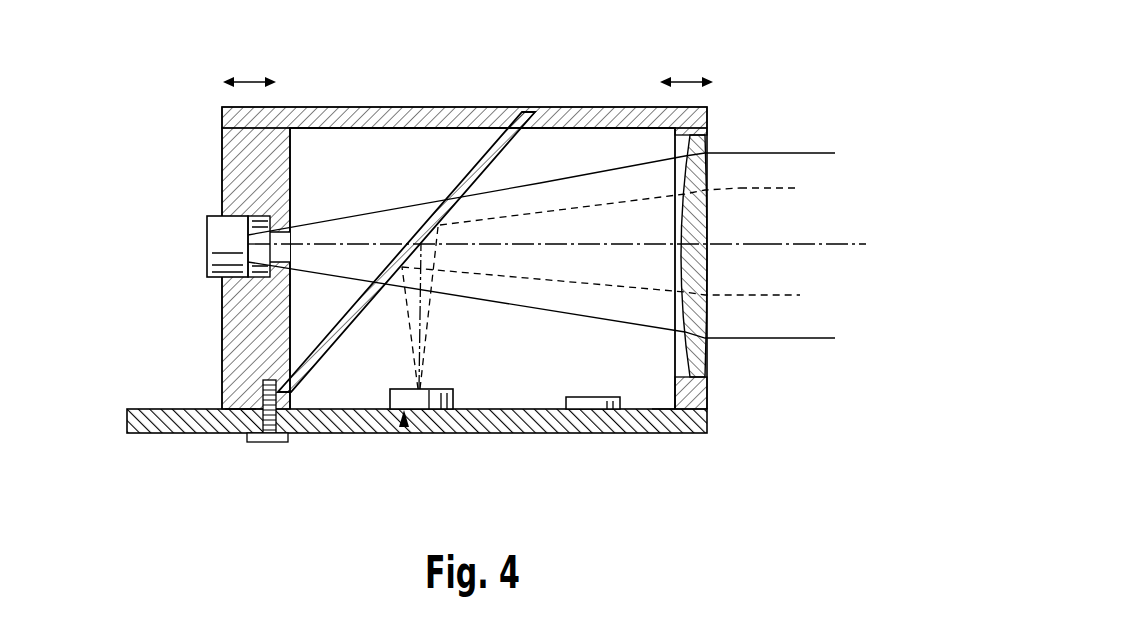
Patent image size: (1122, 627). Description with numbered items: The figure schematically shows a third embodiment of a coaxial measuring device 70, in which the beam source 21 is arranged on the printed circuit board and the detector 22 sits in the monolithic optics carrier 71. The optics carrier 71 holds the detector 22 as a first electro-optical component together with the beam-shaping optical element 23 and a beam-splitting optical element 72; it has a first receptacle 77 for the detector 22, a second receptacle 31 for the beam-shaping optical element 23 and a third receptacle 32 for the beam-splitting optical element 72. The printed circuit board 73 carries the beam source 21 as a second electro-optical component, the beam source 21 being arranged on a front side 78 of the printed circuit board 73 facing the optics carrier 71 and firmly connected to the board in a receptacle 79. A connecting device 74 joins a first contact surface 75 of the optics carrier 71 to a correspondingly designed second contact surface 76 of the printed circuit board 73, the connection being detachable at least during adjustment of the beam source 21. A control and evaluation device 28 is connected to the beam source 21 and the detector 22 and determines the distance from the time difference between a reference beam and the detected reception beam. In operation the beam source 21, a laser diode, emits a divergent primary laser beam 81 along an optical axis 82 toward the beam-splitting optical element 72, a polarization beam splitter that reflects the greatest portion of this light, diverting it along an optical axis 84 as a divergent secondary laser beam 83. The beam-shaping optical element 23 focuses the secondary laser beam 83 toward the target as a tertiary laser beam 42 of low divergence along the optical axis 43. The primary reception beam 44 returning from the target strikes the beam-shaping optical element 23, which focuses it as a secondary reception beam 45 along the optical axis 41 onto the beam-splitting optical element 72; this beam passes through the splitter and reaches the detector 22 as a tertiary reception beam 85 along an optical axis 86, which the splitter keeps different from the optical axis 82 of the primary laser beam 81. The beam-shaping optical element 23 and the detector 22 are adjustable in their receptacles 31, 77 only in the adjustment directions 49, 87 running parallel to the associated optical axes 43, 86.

The coaxial measuring device 70 is at (150, 158).
The monolithic optics carrier 71 is at (380, 113).
The beam-splitting optical element 72 is at (472, 172).
The printed circuit board 73 is at (170, 431).
The connecting device 74 is at (268, 442).
The first contact surface 75 is at (232, 412).
The second contact surface 76 is at (248, 408).
The first receptacle 77 is at (240, 200).
The front side 78 is at (662, 406).
The receptacle 79 is at (403, 430).
The primary laser beam 81 is at (412, 355).
The optical axis 82 is at (424, 331).
The secondary laser beam 83 is at (562, 205).
The optical axis 84 is at (515, 249).
The tertiary reception beam 85 is at (337, 219).
The optical axis 86 is at (381, 244).
The adjustment direction 87 is at (244, 80).
The beam source 21 is at (418, 412).
The detector 22 is at (215, 238).
The beam-shaping optical element 23 is at (697, 317).
The control and evaluation device 28 is at (592, 412).
The second receptacle 31 is at (690, 396).
The third receptacle 32 is at (503, 112).
The optical axis 41 is at (565, 249).
The tertiary laser beam 42 is at (767, 187).
The optical axis 43 is at (868, 245).
The primary reception beam 44 is at (822, 340).
The secondary reception beam 45 is at (610, 171).
The adjustment direction 49 is at (688, 80).